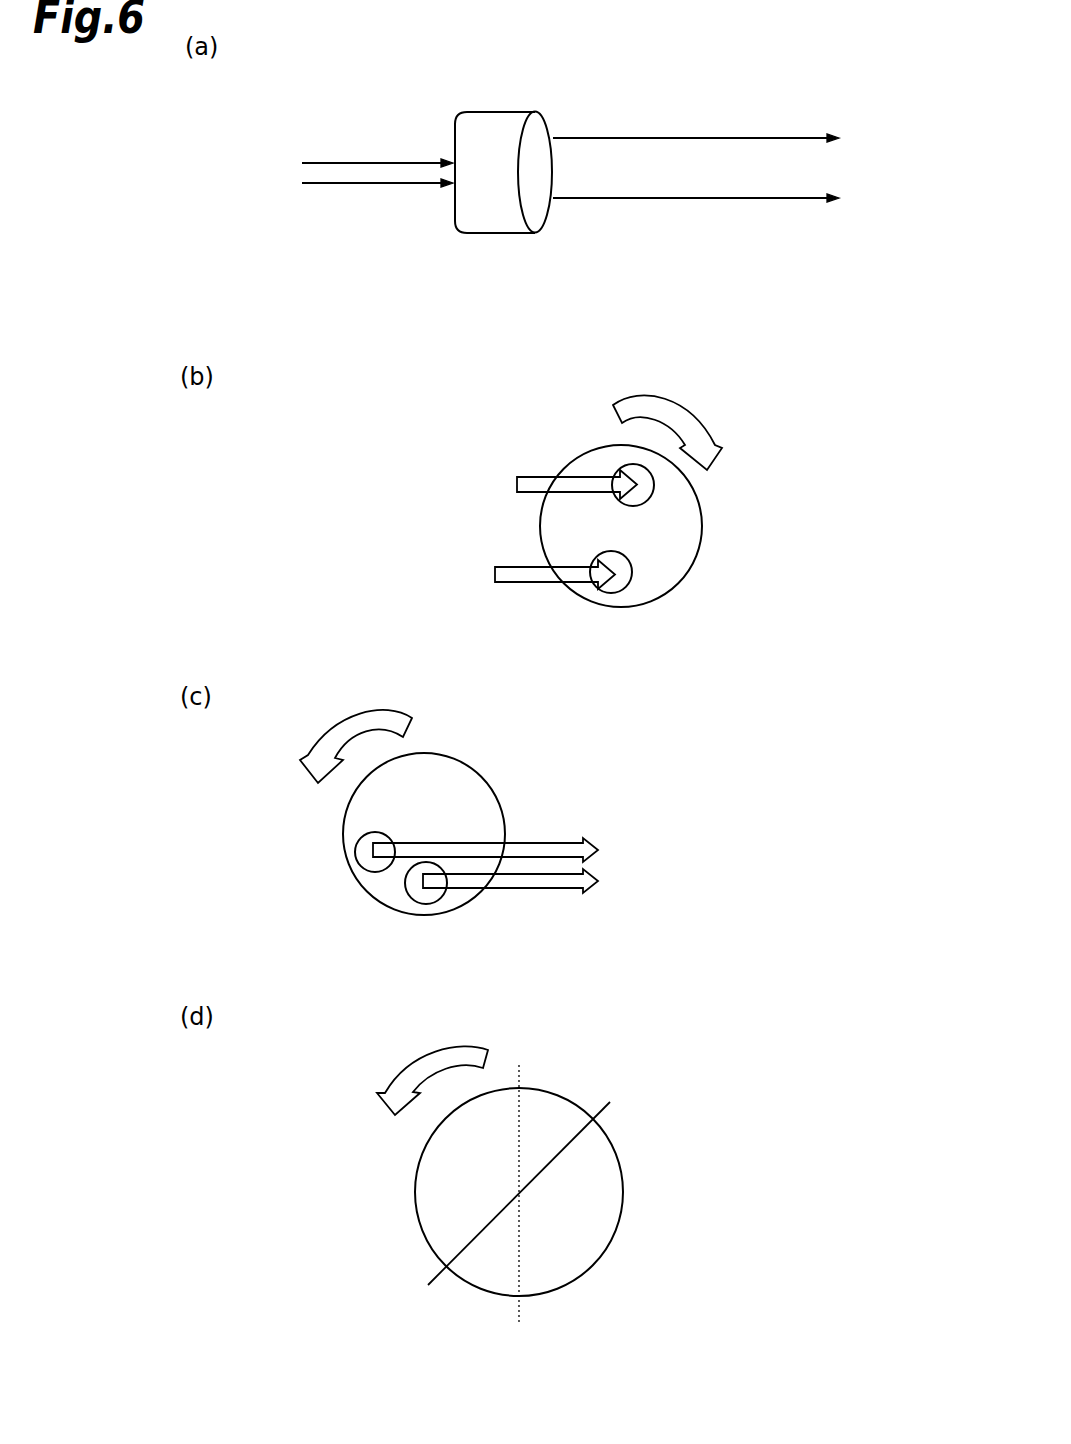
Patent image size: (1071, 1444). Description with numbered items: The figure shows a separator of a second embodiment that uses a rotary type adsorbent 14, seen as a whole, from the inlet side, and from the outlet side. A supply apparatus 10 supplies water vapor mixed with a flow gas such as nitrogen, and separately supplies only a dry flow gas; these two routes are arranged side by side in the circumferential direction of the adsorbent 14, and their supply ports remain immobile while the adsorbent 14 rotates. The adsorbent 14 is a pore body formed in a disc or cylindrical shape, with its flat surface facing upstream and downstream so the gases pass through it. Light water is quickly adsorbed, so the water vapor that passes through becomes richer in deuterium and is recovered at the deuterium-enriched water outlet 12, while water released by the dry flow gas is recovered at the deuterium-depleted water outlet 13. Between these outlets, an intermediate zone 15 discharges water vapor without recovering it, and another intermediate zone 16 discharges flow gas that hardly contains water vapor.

The supply apparatus 10 is at (300, 182).
The deuterium-enriched water outlet 12 is at (370, 1195).
The deuterium-depleted water outlet 13 is at (640, 1268).
The adsorbent 14 is at (503, 234).
The intermediate zone 15 is at (485, 1282).
The intermediate zone 16 is at (557, 1105).